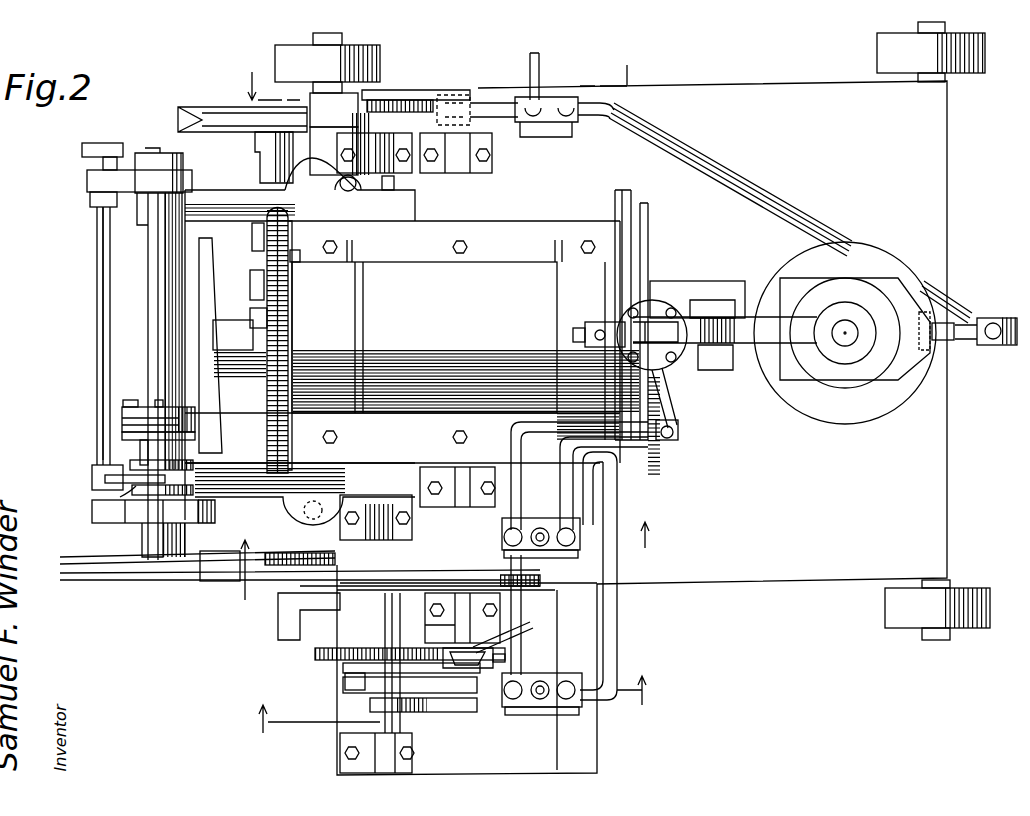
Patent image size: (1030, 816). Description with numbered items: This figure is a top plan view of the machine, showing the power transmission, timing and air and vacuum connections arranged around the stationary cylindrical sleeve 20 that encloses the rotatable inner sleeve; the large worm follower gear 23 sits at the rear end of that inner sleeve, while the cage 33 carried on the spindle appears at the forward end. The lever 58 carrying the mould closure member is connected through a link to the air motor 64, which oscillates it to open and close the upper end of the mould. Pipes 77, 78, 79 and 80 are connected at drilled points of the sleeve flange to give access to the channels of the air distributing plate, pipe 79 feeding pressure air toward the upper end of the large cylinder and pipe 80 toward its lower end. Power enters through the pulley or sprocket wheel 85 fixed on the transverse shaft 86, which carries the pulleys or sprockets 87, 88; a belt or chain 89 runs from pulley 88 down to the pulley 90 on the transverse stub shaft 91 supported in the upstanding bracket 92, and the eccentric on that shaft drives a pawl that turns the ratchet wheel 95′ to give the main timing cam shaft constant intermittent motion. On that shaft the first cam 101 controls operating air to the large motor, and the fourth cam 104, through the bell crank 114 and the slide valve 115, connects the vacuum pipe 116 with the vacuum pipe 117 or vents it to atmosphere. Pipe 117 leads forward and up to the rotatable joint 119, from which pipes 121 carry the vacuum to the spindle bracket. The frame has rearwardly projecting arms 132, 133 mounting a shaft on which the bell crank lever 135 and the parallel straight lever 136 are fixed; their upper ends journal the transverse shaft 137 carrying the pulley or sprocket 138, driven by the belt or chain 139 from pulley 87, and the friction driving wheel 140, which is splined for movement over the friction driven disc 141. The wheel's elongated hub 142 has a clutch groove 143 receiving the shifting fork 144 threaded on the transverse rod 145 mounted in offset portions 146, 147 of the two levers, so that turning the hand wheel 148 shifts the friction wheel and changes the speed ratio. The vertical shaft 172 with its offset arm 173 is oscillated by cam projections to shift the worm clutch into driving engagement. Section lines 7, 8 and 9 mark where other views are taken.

The section line 7- 7 is at (436, 73).
The section line 8- 8 is at (446, 704).
The section line 9- 9 is at (439, 570).
The cylindrical sleeve 20 is at (448, 351).
The worm follower gear 23 is at (290, 325).
The cage 33 is at (864, 248).
The lever 58 is at (742, 312).
The air motor 64 is at (630, 318).
The pipe 77 is at (512, 433).
The pipe 78 is at (573, 505).
The pipe 79 is at (583, 491).
The pipe 80 is at (611, 620).
The pulley or sprocket wheel 85 is at (242, 107).
The transverse shaft 86 is at (268, 160).
The pulley or sprocket 87 is at (268, 590).
The pulley or sprocket 88 is at (228, 580).
The belt or chain 89 is at (320, 588).
The pulley 90 is at (546, 590).
The transverse stub shaft 91 is at (480, 645).
The bracket 92 is at (452, 613).
The ratchet wheel 95′ is at (322, 662).
The cam 101 is at (425, 715).
The cam 104 is at (407, 98).
The bell crank 114 is at (443, 94).
The slide valve 115 is at (512, 85).
The pipe 116 is at (528, 60).
The vacuum pipe 117 is at (586, 102).
The rotatable joint 119 is at (996, 343).
The pipes 121 is at (958, 305).
The rearwardly projecting arm 132 is at (232, 515).
The rearwardly projecting arm 133 is at (230, 190).
The bell crank lever 135 is at (225, 566).
The straight lever 136 is at (143, 175).
The transverse shaft 137 is at (150, 260).
The pulley or sprocket 138 is at (95, 580).
The belt or chain 139 is at (140, 585).
The friction driving wheel 140 is at (122, 412).
The friction driven disc 141 is at (210, 285).
The elongated hub 142 is at (145, 450).
The clutch groove 143 is at (190, 470).
The shifting fork 144 is at (104, 485).
The transverse rod 145 is at (97, 418).
The offset portion 146 is at (95, 518).
The offset portion 147 is at (90, 182).
The hand wheel 148 is at (84, 152).
The vertical shaft 172 is at (346, 188).
The offset arm 173 is at (396, 182).